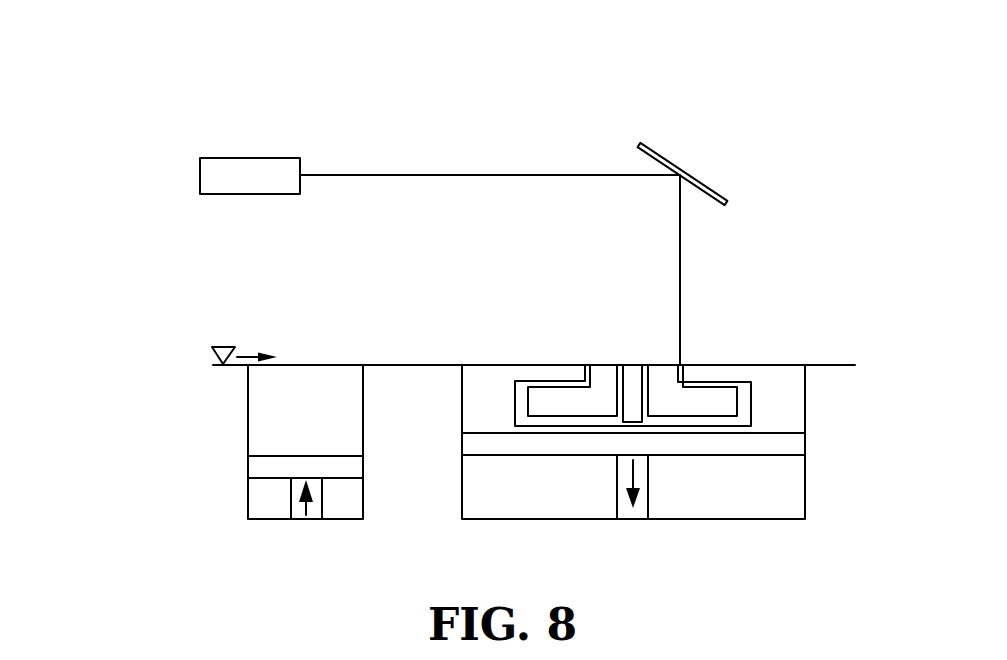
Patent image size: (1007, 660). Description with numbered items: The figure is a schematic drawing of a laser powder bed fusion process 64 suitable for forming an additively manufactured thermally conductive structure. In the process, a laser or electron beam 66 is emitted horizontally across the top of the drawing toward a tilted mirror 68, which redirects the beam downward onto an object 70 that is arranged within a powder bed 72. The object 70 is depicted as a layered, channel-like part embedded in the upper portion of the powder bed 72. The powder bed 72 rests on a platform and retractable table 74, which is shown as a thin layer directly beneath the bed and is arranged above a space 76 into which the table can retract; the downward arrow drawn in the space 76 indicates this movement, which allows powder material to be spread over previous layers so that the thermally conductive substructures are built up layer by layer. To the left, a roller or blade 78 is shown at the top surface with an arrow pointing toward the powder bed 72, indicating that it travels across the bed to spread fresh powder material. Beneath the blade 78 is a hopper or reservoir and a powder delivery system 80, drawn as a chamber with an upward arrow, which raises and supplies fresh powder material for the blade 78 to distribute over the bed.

The laser powder bed fusion process 64 is at (115, 139).
The laser or electron beam 66 is at (248, 178).
The tilted mirror 68 is at (665, 158).
The object 70 is at (678, 364).
The powder bed 72 is at (778, 390).
The platform and retractable table 74 is at (785, 446).
The space 76 is at (765, 499).
The roller or blade 78 is at (222, 348).
The hopper or reservoir and powder delivery system 80 is at (272, 501).